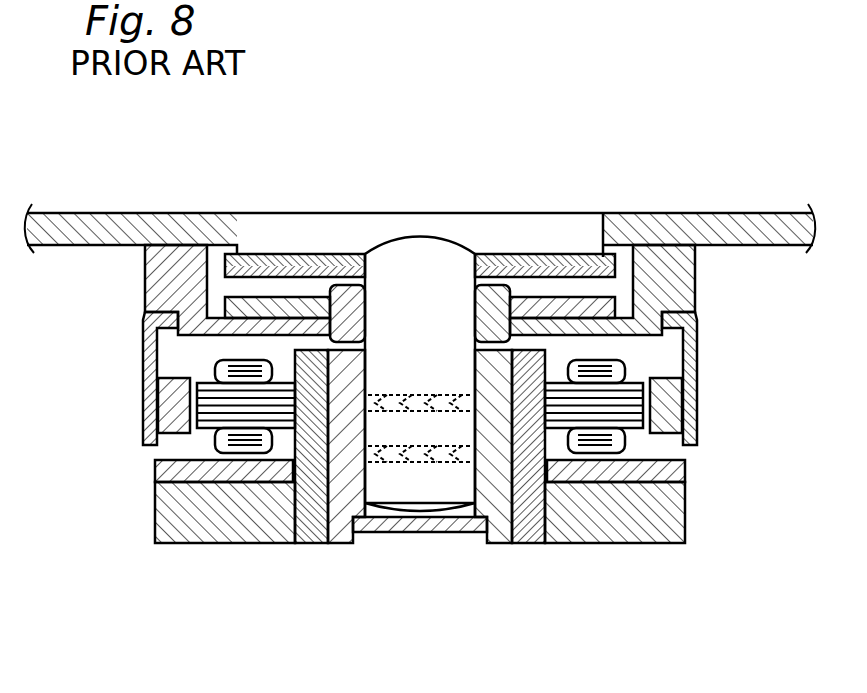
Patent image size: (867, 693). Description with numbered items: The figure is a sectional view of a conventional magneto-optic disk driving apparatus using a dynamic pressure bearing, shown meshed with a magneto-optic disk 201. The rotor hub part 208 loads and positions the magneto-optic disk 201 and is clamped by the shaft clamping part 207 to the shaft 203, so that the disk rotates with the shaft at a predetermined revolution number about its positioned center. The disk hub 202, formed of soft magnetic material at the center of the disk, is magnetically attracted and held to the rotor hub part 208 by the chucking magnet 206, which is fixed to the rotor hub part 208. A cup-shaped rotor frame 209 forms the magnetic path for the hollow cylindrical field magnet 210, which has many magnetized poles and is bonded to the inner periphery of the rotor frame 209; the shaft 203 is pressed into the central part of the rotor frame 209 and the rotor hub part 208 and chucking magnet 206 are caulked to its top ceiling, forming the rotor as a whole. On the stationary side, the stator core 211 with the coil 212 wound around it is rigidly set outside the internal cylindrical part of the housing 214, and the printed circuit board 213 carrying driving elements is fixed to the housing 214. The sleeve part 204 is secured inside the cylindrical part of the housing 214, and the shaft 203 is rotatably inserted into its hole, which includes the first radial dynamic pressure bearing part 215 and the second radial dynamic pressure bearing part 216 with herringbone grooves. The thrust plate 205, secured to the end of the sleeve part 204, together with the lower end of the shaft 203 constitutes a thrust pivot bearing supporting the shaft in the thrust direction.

The magneto-optic disk 201 is at (697, 218).
The disk hub 202 is at (275, 268).
The shaft 203 is at (432, 257).
The sleeve part 204 is at (338, 495).
The thrust plate 205 is at (392, 530).
The chucking magnet 206 is at (538, 297).
The shaft clamping part 207 is at (345, 305).
The rotor hub part 208 is at (662, 276).
The rotor frame 209 is at (690, 358).
The magnet 210 is at (657, 417).
The stator core 211 is at (622, 436).
The coil 212 is at (605, 420).
The printed circuit board 213 is at (202, 478).
The housing 214 is at (223, 517).
The first radial dynamic pressure bearing part 215 is at (395, 400).
The second radial dynamic pressure bearing part 216 is at (448, 458).